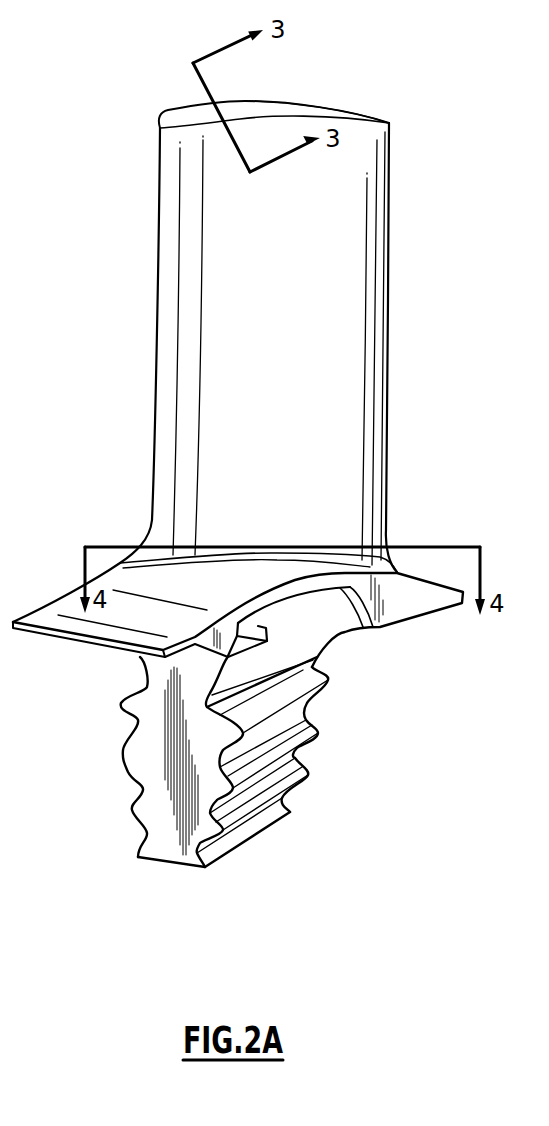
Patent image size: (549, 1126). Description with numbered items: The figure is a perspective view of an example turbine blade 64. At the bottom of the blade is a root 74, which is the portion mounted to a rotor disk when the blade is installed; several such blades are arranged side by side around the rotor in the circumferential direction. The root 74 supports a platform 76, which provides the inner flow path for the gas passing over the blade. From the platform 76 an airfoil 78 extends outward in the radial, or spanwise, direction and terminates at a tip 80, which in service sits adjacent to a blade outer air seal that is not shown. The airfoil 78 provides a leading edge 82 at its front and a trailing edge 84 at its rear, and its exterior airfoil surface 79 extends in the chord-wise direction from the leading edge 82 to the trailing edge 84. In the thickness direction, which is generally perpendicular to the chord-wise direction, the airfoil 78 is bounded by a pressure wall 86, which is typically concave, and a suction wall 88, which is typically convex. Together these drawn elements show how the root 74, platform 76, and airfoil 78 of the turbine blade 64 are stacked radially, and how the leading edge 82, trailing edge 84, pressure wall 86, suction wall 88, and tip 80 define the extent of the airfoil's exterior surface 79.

The turbine blade 64 is at (122, 293).
The root 74 is at (162, 763).
The platform 76 is at (278, 568).
The airfoil 78 is at (325, 440).
The exterior airfoil surface 79 is at (348, 482).
The tip 80 is at (178, 107).
The leading edge 82 is at (157, 290).
The trailing edge 84 is at (388, 280).
The pressure wall 86 is at (272, 344).
The suction wall 88 is at (307, 97).